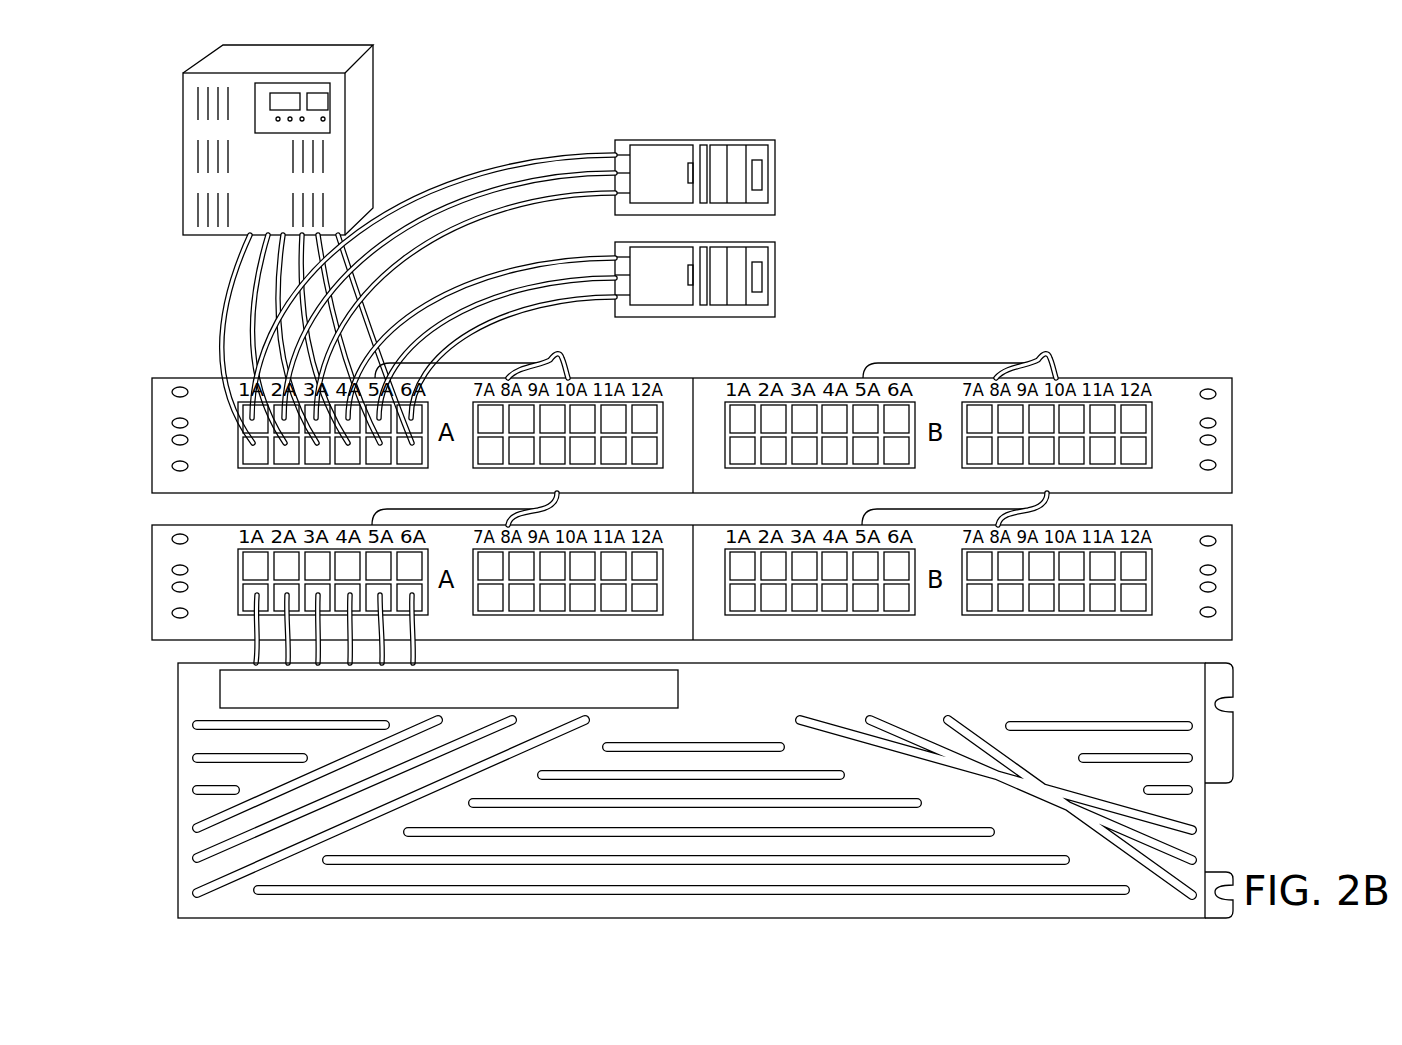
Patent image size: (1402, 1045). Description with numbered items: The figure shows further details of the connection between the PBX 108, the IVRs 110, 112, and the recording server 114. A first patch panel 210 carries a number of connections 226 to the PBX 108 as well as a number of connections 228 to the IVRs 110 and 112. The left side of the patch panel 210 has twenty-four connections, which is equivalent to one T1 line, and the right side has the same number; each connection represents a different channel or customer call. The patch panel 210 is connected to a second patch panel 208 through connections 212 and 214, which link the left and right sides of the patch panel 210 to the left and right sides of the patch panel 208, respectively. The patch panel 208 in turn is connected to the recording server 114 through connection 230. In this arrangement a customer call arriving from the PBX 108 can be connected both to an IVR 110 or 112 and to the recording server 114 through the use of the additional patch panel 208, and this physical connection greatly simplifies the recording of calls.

The PBX 108 is at (374, 108).
The IVR 110 is at (775, 148).
The IVR 112 is at (776, 258).
The recording server 114 is at (578, 708).
The patch panel 208 is at (152, 531).
The patch panel 210 is at (152, 385).
The connection 212 is at (556, 352).
The connection 214 is at (1040, 352).
The connections 226 is at (228, 290).
The connections 228 is at (520, 172).
The connection 230 is at (440, 640).